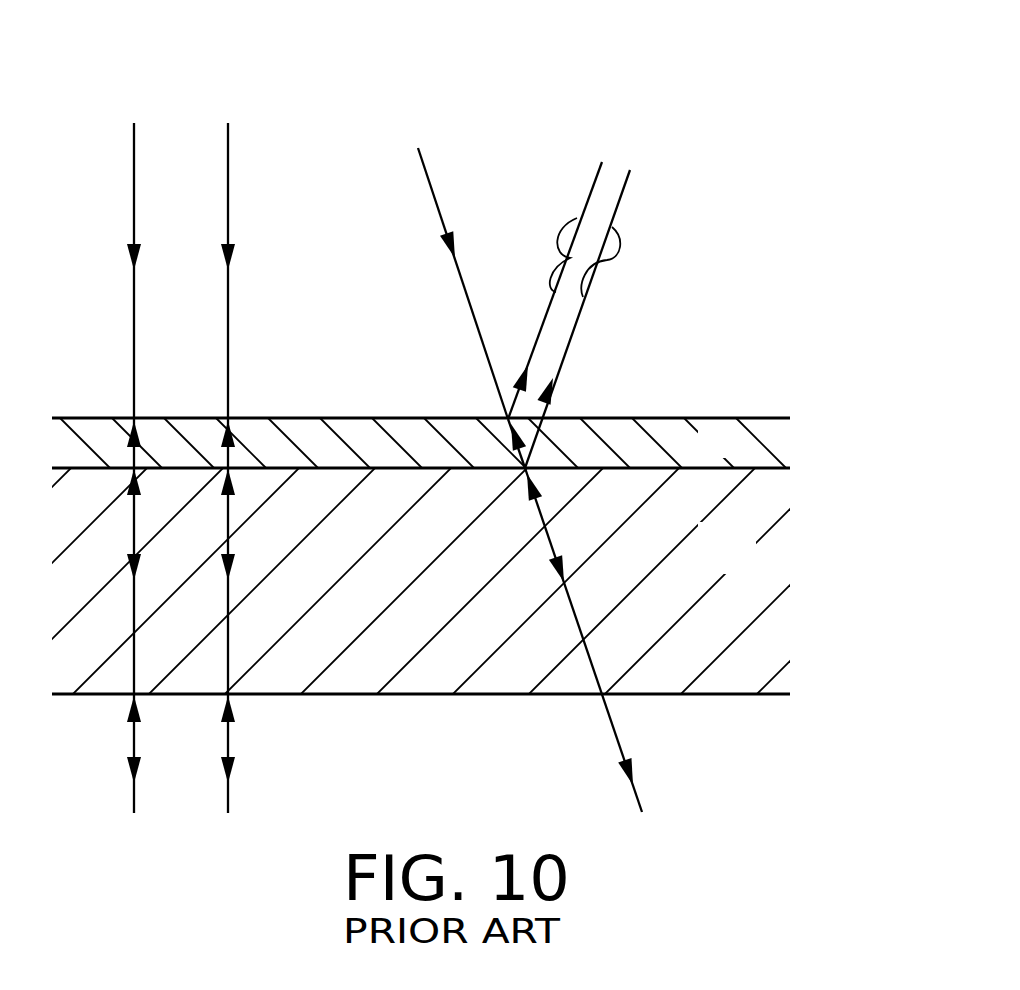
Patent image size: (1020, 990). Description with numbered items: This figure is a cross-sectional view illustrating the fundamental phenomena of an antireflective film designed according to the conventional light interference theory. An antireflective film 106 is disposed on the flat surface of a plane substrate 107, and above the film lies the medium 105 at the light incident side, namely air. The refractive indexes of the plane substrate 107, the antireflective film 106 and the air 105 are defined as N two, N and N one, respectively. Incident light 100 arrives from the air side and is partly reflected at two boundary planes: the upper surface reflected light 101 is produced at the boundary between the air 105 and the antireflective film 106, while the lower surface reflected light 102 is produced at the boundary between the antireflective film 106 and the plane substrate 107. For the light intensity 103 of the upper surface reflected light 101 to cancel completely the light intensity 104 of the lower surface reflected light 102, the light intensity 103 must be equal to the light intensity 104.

The incident light 100 is at (227, 173).
The upper surface reflected light 101 is at (227, 414).
The lower surface reflected light 102 is at (134, 468).
The light intensity of the upper surface reflected light 103 is at (578, 220).
The light intensity of the lower surface reflected light 104 is at (615, 247).
The medium 105 is at (762, 360).
The antireflective film 106 is at (777, 447).
The plane substrate 107 is at (785, 542).